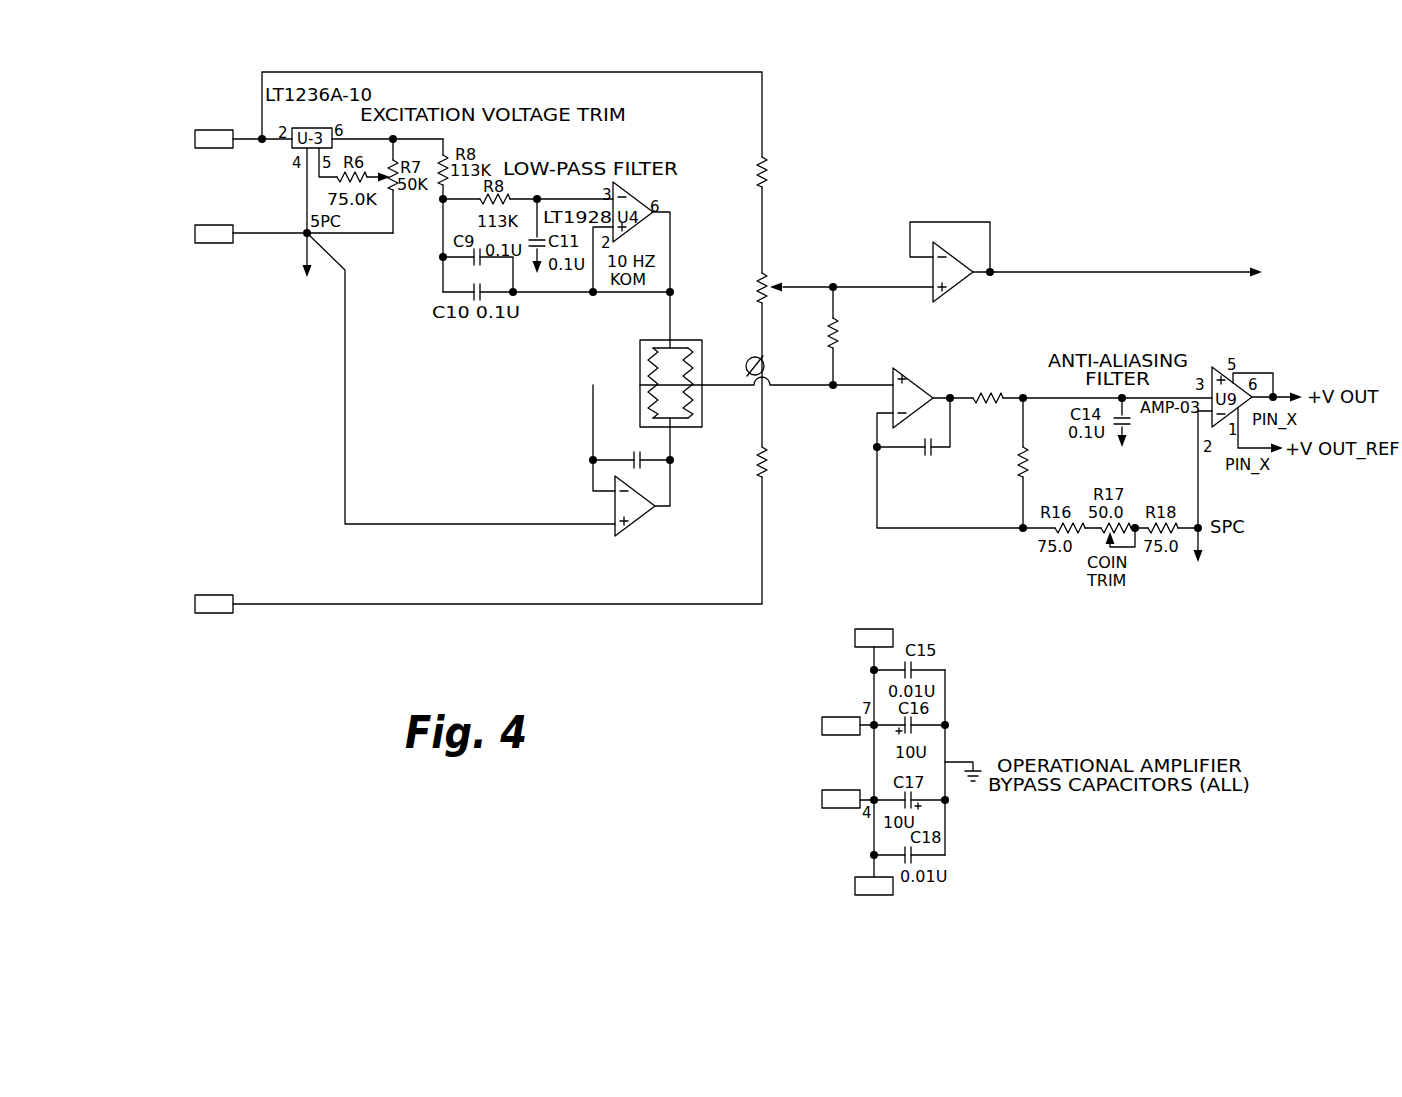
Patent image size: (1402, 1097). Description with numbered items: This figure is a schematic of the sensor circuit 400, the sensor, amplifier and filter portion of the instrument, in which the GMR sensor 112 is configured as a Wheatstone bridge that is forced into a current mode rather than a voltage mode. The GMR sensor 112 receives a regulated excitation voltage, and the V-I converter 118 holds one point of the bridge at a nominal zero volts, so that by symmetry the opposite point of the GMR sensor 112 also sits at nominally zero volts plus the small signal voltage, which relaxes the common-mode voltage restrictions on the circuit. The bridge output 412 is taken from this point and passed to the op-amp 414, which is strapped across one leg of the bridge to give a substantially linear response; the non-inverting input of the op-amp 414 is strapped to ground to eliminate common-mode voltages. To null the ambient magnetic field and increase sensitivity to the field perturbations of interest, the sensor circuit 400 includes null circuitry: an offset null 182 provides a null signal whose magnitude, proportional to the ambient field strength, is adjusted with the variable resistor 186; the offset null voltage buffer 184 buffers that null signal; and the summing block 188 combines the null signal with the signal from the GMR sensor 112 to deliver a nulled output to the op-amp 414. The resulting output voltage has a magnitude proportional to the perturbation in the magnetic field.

The sensor circuit 400 is at (1040, 146).
The offset null 182 is at (814, 210).
The offset null voltage buffer 184 is at (1018, 249).
The variable resistor 186 is at (762, 272).
The summing block 188 is at (833, 390).
The GMR sensor 112 is at (696, 310).
The bridge output signal line 412 is at (725, 373).
The op-amp 414 is at (885, 397).
The V-I converter 118 is at (637, 524).